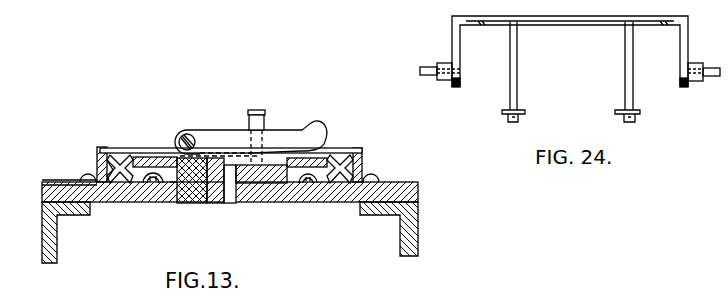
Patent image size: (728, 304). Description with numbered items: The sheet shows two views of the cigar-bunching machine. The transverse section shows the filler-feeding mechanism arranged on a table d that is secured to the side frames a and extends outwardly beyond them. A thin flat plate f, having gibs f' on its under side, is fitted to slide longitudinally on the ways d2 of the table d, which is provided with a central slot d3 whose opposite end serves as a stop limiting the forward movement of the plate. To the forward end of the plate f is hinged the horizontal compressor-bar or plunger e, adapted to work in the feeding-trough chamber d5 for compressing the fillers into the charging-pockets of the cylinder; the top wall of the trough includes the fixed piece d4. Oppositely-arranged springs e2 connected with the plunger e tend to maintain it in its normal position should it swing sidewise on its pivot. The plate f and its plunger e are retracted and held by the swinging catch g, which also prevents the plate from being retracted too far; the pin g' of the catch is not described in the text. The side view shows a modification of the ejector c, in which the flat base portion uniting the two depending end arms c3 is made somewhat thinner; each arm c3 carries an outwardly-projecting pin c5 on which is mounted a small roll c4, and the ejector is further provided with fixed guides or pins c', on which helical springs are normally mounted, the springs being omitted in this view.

In FIG. 13, the side frame a is at (42, 228).
In FIG. 13, the table d is at (209, 191).
In FIG. 13, the upright side pieces d' is at (232, 164).
In FIG. 13, the ways d2 is at (250, 170).
In FIG. 13, the central slot d3 is at (229, 195).
In FIG. 13, the fixed piece d4 is at (340, 156).
In FIG. 13, the feeding-trough chamber d5 is at (123, 172).
In FIG. 13, the compressor-bar e is at (112, 163).
In FIG. 13, the springs e2 is at (140, 186).
In FIG. 13, the flat plate f is at (229, 145).
In FIG. 13, the gibs f' is at (173, 206).
In FIG. 13, the swinging catch g is at (251, 129).
In FIG. 13, the plunger g' is at (258, 123).
In FIG. 24, the ejector c is at (570, 51).
In FIG. 24, the fixed guides or pins c' is at (571, 72).
In FIG. 24, the end arms c3 is at (452, 33).
In FIG. 24, the roll c4 is at (443, 78).
In FIG. 24, the pin c5 is at (430, 69).